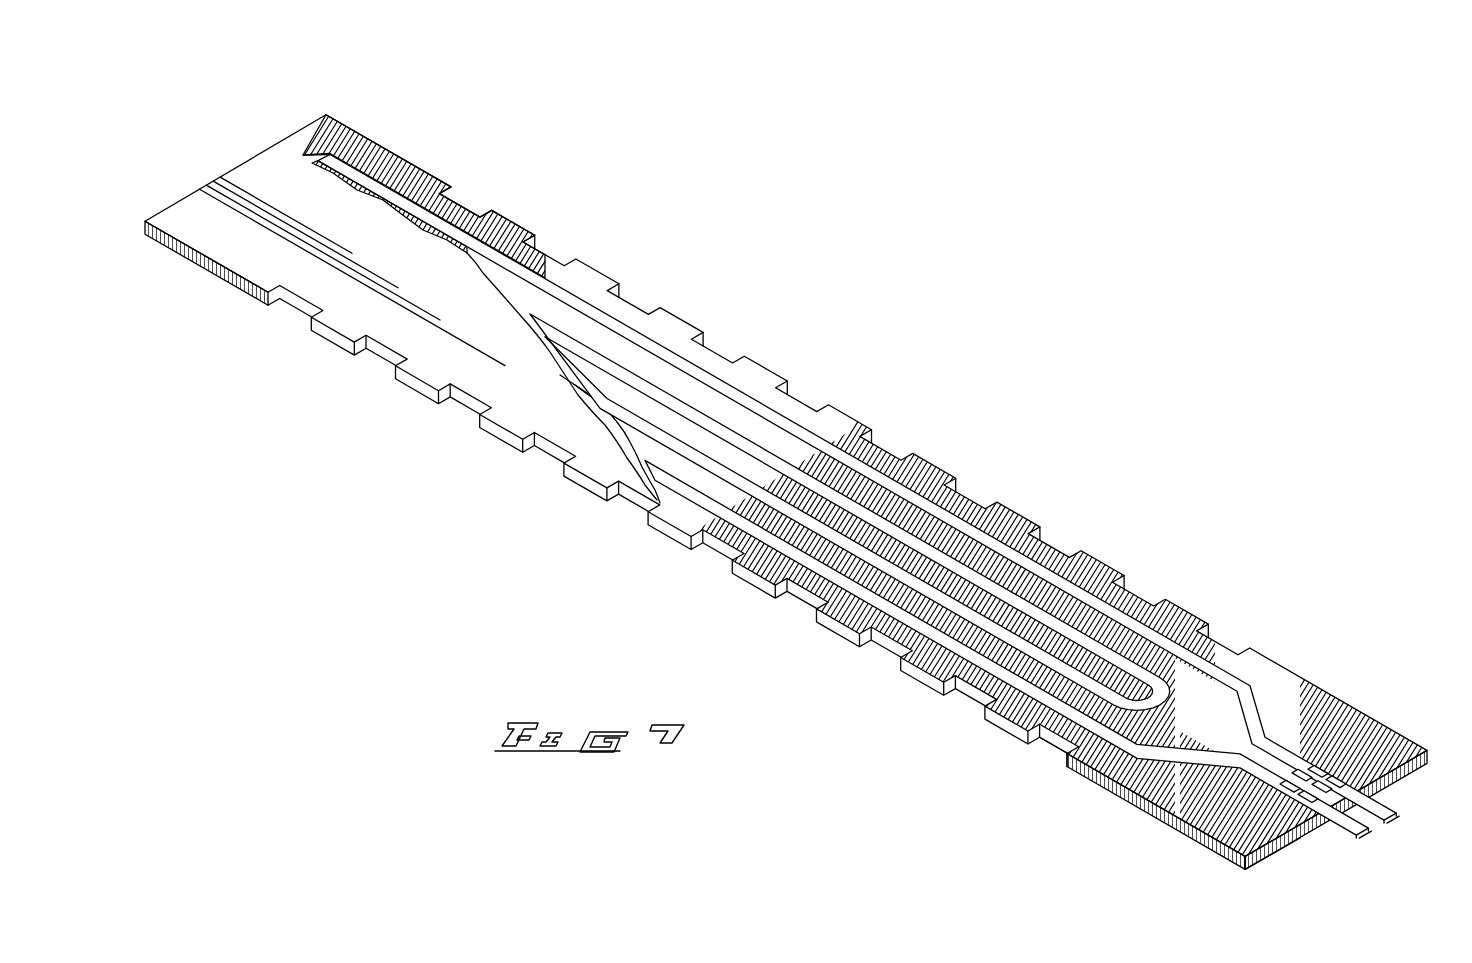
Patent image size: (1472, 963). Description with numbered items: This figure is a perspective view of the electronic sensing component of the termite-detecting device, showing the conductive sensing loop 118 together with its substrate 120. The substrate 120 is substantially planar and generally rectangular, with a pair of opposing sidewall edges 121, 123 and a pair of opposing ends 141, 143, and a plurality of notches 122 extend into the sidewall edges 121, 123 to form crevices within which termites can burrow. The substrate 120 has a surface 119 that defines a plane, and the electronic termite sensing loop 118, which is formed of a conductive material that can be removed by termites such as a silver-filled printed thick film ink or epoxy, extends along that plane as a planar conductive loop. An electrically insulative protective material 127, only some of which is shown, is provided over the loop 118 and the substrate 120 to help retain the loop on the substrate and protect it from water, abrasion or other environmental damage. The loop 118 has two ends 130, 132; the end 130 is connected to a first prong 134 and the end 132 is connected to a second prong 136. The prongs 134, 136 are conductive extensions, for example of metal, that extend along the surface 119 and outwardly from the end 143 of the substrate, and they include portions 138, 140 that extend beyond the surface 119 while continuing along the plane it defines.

The electronic termite sensing loop 118 is at (1197, 668).
The surface 119 is at (1165, 775).
The substrate 120 is at (1338, 725).
The sidewall edge 121 is at (1272, 650).
The notches 122 is at (478, 195).
The sidewall edge 123 is at (1098, 795).
The electrically insulative protective material 127 is at (243, 232).
The end 130 is at (1290, 745).
The end 132 is at (1240, 800).
The first prong 134 is at (1388, 830).
The second prong 136 is at (1362, 838).
The portion 138 is at (1405, 797).
The portion 140 is at (1333, 838).
The end 141 is at (212, 150).
The end 143 is at (1288, 858).